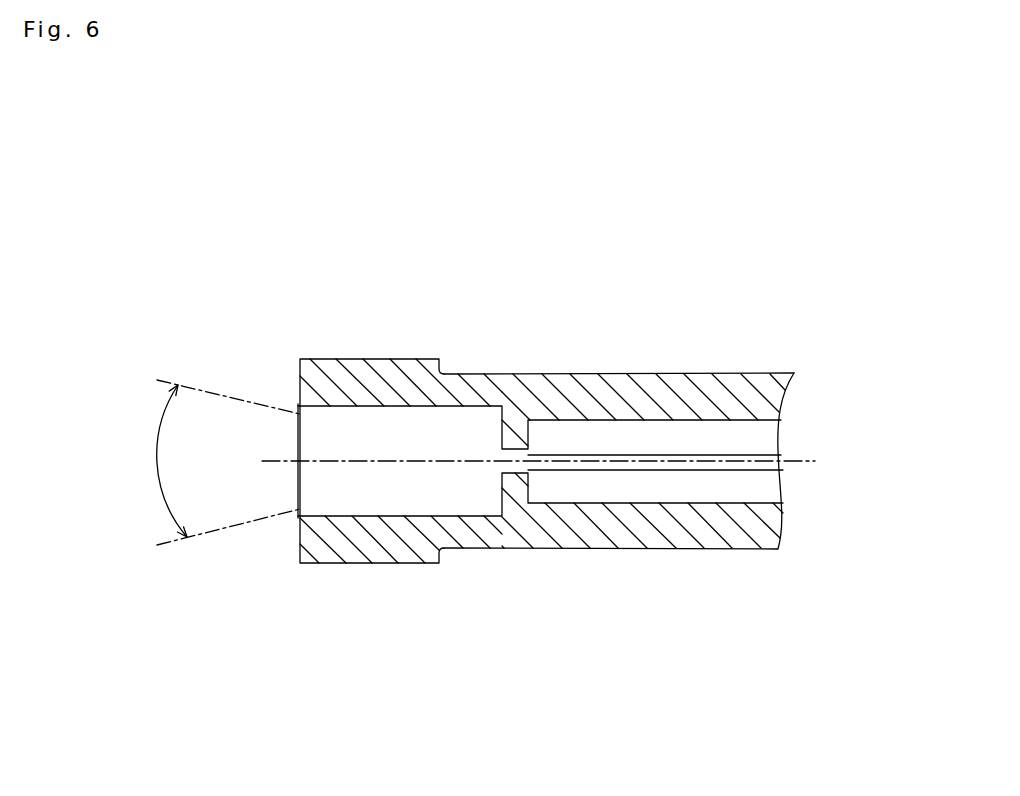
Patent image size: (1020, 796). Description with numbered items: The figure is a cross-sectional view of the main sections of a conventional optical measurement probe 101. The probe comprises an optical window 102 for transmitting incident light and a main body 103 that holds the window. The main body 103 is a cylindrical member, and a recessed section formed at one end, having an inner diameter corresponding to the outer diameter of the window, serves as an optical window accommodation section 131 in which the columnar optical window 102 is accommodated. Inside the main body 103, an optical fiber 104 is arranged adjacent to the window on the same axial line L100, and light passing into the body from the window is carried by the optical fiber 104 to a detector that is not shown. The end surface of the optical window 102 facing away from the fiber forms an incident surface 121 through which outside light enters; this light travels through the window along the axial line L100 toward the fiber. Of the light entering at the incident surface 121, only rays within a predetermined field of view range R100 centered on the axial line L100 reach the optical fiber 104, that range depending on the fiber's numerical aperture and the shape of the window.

The optical measurement probe 101 is at (683, 299).
The optical window 102 is at (347, 513).
The main body 103 is at (552, 375).
The optical fiber 104 is at (672, 473).
The incident surface 121 is at (299, 478).
The optical window accommodation section 131 is at (452, 410).
The axial line L100 is at (275, 461).
The field of view range R100 is at (158, 495).